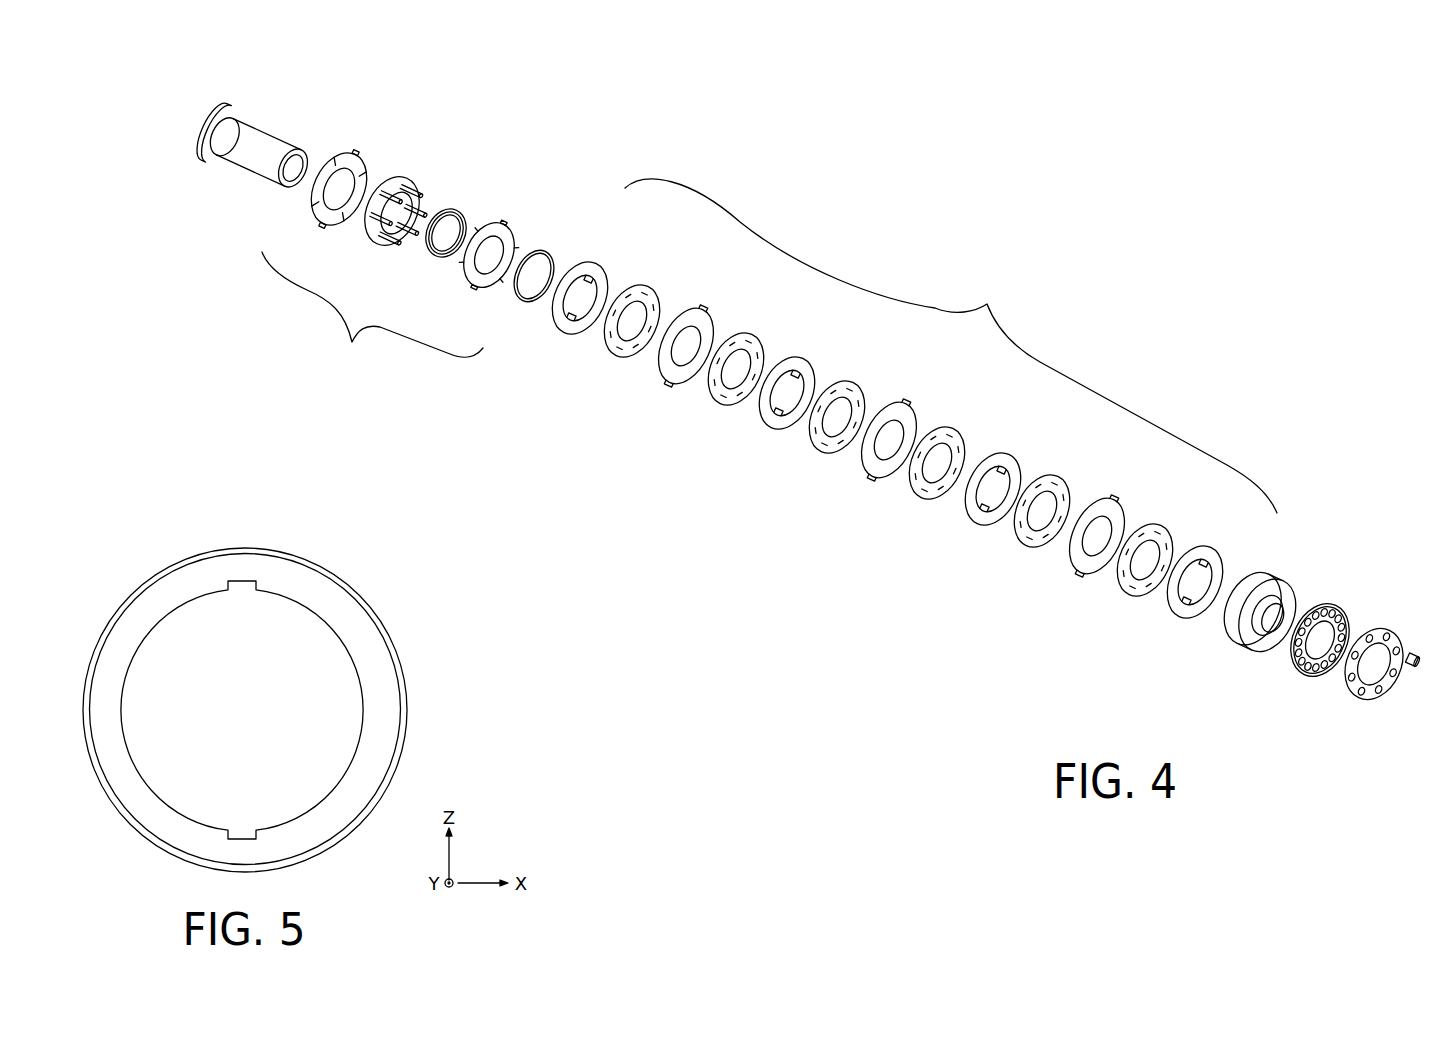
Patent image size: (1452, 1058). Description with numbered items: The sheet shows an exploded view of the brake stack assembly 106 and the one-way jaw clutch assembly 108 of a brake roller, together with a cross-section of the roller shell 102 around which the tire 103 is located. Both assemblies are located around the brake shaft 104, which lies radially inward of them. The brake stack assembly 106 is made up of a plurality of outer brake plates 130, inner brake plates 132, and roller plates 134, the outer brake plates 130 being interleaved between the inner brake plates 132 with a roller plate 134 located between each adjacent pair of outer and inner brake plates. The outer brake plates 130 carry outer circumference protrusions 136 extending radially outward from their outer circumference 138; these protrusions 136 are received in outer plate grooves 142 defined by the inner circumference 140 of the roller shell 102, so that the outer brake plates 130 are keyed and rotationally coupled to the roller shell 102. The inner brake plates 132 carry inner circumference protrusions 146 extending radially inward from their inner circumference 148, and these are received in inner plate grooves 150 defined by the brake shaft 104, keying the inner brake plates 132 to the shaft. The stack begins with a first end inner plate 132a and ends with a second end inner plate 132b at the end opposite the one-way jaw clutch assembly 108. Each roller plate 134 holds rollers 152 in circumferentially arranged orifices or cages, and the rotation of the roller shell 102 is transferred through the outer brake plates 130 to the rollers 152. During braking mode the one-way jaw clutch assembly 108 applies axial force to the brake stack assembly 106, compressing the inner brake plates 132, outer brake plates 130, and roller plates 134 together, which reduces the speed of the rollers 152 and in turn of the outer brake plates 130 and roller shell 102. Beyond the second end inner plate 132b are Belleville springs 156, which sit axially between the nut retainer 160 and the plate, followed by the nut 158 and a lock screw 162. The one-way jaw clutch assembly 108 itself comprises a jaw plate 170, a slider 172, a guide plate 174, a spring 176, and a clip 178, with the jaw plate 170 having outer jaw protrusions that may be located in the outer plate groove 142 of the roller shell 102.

In FIG. 5, the roller shell 102 is at (350, 630).
In FIG. 5, the tire 103 is at (325, 585).
In FIG. 4, the brake shaft 104 is at (250, 162).
In FIG. 4, the brake stack assembly 106 is at (951, 346).
In FIG. 4, the one-way jaw clutch assembly 108 is at (372, 312).
In FIG. 4, the outer brake plate 130 is at (700, 318).
In FIG. 4, the inner brake plate 132 is at (791, 366).
In FIG. 4, the first end inner plate 132a is at (592, 272).
In FIG. 4, the second end inner plate 132b is at (1219, 554).
In FIG. 4, the roller plate 134 is at (616, 350).
In FIG. 4, the outer circumference protrusion 136 is at (886, 404).
In FIG. 4, the outer circumference 138 is at (864, 470).
In FIG. 5, the inner circumference 140 is at (364, 703).
In FIG. 5, the outer plate groove 142 is at (235, 597).
In FIG. 4, the inner circumference protrusion 146 is at (573, 298).
In FIG. 4, the inner circumference 148 is at (590, 292).
In FIG. 4, the inner plate groove 150 is at (277, 129).
In FIG. 4, the roller 152 is at (960, 443).
In FIG. 4, the Belleville spring 156 is at (1244, 645).
In FIG. 4, the nut 158 is at (1360, 695).
In FIG. 4, the nut retainer 160 is at (1331, 603).
In FIG. 4, the lock screw 162 is at (1417, 670).
In FIG. 4, the jaw plate 170 is at (357, 158).
In FIG. 4, the slider 172 is at (371, 235).
In FIG. 4, the guide plate 174 is at (470, 276).
In FIG. 4, the spring 176 is at (426, 247).
In FIG. 4, the clip 178 is at (518, 297).